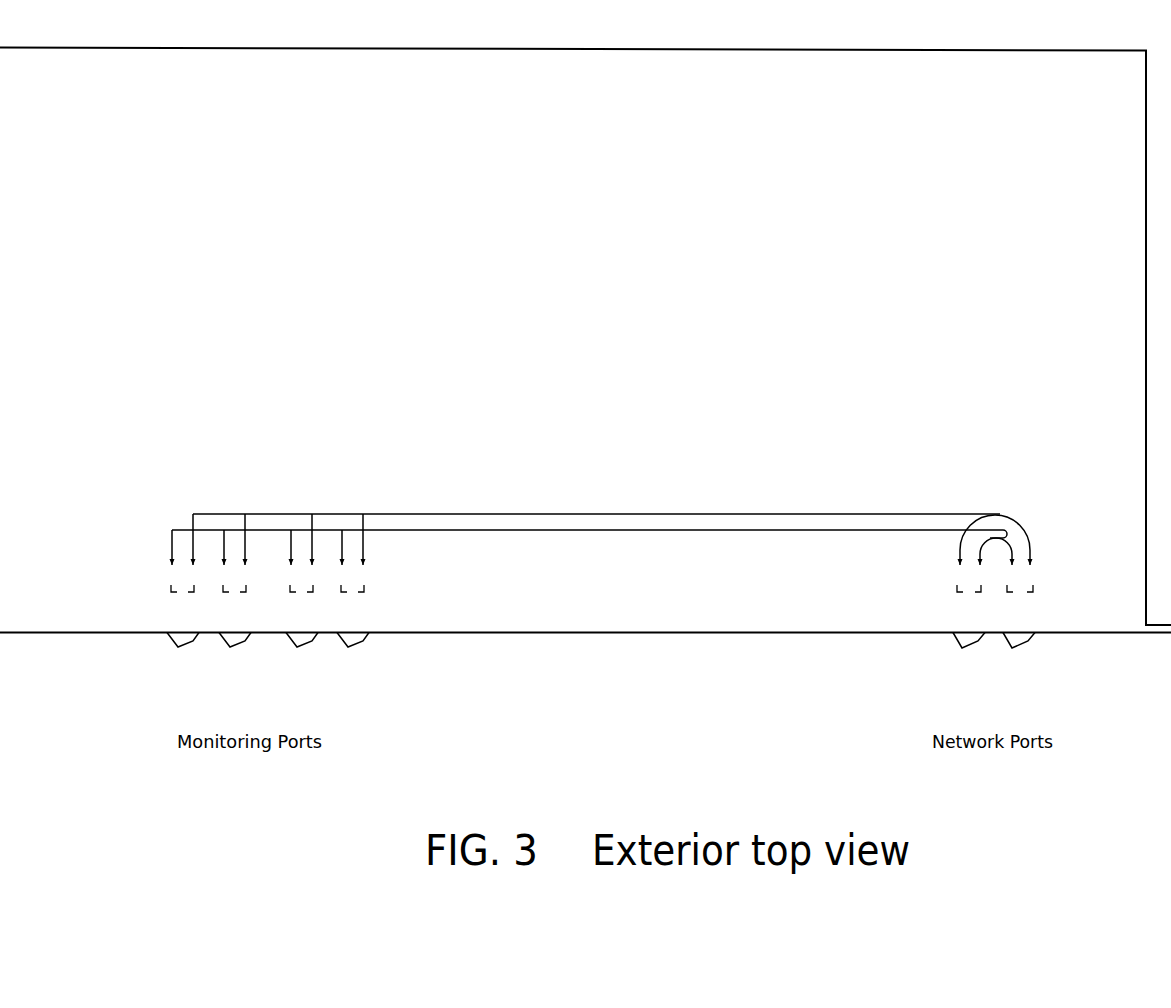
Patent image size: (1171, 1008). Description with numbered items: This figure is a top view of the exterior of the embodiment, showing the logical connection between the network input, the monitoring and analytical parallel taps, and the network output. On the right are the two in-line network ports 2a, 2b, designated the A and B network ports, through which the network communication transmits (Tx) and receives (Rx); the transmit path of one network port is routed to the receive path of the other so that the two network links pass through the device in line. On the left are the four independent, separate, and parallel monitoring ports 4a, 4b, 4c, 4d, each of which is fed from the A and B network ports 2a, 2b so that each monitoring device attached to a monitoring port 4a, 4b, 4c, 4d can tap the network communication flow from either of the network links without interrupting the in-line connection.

The monitoring port 4a is at (179, 647).
The monitoring port 4b is at (231, 647).
The monitoring port 4c is at (298, 647).
The monitoring port 4d is at (349, 647).
The in-line network port 2a is at (972, 645).
The in-line network port 2b is at (1021, 645).